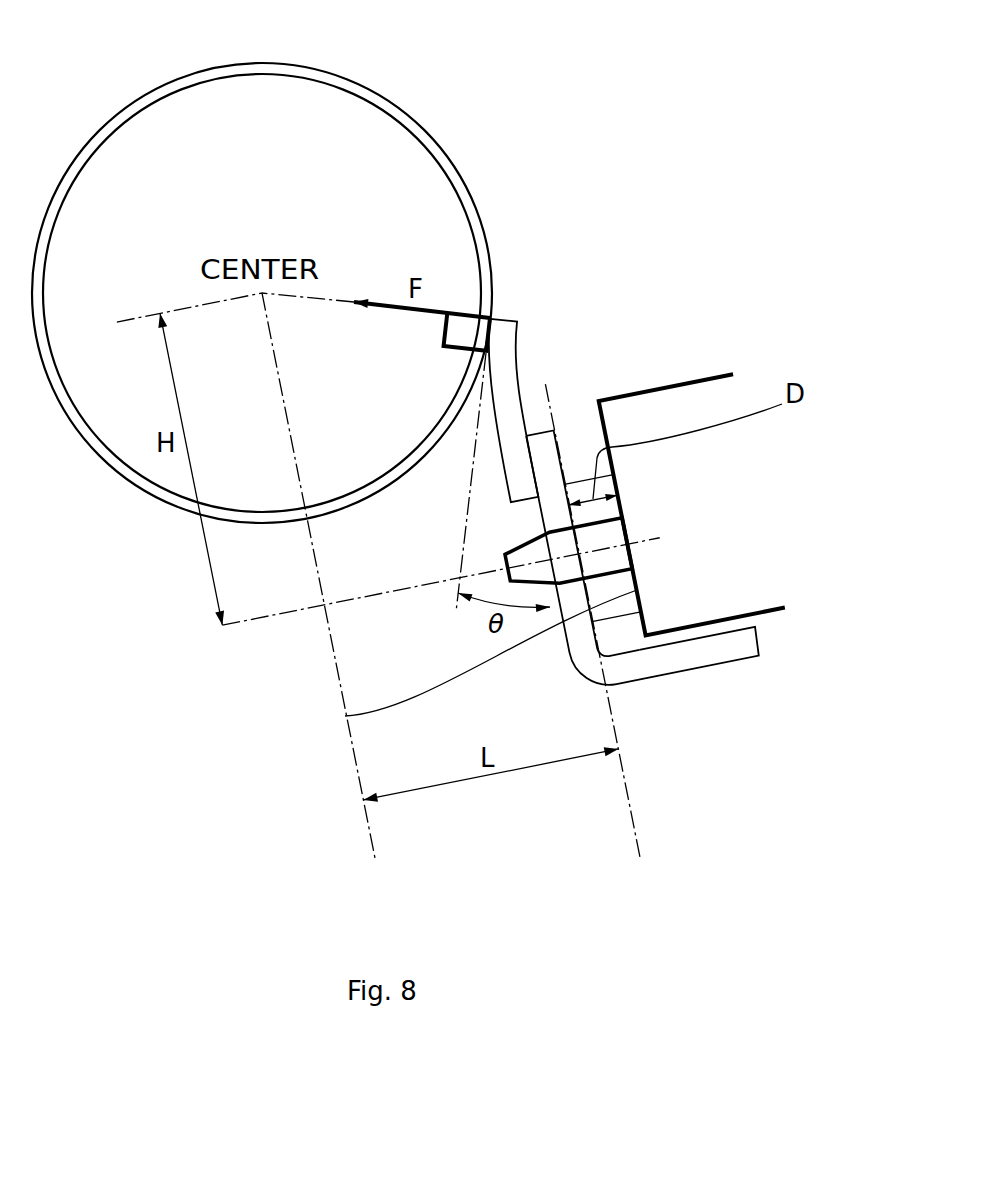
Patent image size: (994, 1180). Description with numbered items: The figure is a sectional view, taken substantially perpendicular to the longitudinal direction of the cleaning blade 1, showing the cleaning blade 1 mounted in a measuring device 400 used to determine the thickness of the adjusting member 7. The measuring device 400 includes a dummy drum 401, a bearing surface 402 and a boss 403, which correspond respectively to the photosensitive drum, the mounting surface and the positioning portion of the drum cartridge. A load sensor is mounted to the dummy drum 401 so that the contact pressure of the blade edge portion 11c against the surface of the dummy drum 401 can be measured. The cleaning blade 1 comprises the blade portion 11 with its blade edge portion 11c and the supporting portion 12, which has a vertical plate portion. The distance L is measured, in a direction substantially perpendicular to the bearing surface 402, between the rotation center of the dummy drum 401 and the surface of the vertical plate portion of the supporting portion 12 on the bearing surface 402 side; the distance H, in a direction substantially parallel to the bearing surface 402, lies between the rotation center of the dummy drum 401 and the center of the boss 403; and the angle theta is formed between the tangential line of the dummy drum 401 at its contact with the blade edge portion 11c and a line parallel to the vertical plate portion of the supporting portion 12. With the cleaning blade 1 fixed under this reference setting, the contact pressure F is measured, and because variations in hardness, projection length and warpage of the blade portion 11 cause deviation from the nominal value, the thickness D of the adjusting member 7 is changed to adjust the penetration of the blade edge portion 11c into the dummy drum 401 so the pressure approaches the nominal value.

The dummy drum 401 is at (198, 70).
The measuring device 400 is at (568, 147).
The blade edge portion 11c is at (490, 317).
The blade portion 11 is at (520, 350).
The adjusting member 7 is at (578, 485).
The boss 403 is at (610, 532).
The bearing surface 402 is at (345, 716).
The cleaning blade 1 is at (648, 686).
The supporting portion 12 is at (705, 653).